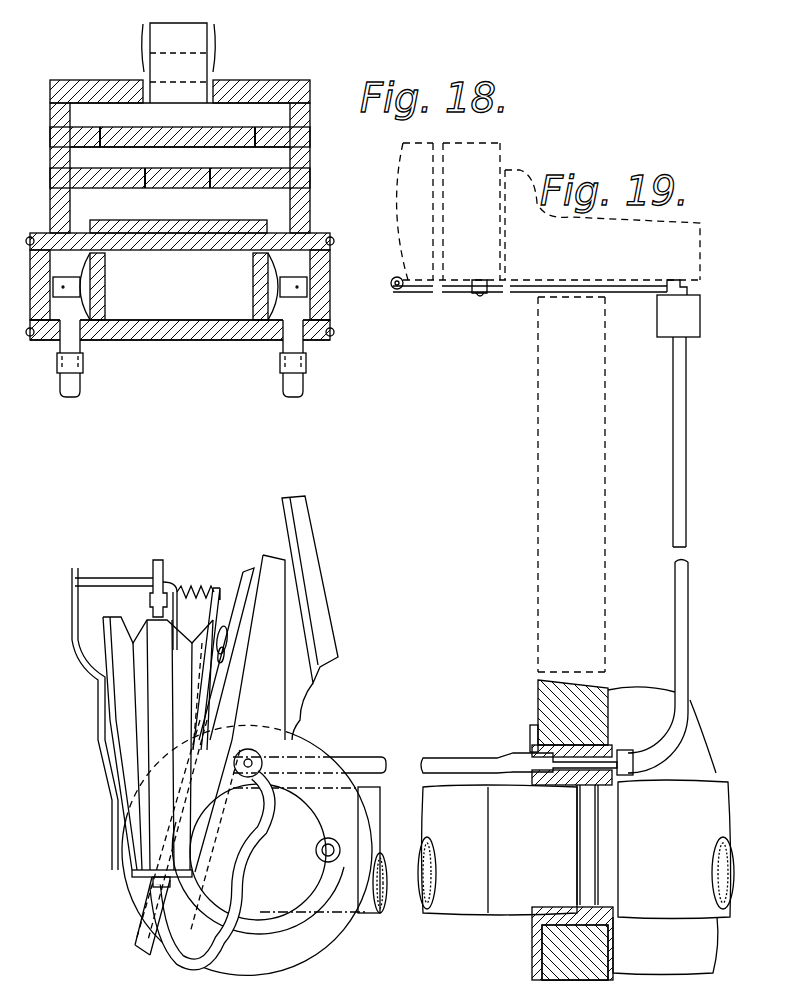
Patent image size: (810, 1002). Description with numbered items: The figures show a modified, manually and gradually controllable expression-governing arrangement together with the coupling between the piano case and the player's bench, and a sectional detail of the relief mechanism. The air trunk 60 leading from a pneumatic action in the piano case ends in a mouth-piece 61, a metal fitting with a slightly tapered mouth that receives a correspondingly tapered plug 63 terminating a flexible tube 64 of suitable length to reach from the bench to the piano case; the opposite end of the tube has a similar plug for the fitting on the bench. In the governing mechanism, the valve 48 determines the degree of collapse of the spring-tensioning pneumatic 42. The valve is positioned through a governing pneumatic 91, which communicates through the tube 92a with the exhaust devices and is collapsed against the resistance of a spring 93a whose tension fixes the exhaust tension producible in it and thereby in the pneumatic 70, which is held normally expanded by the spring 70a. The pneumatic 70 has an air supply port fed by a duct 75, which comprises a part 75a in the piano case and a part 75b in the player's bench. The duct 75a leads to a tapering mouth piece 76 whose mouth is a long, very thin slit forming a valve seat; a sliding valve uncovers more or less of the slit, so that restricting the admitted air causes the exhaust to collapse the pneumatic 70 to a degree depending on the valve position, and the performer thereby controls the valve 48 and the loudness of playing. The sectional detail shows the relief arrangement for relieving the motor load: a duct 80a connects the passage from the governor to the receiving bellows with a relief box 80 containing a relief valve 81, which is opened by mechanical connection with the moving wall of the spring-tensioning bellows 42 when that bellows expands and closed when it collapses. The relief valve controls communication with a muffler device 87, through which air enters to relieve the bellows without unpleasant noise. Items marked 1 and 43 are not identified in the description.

In FIG. 18, the muffler device 87 is at (261, 88).
In FIG. 18, the relief box 80 is at (233, 336).
In FIG. 18, the duct 80a is at (80, 393).
In FIG. 18, the relief valve 81 is at (88, 311).
In FIG. 19, the blade 1 is at (310, 543).
In FIG. 19, the spring-tensioning pneumatic 42 is at (284, 558).
In FIG. 19, the valve 48 is at (247, 570).
In FIG. 19, the pneumatic 70 is at (196, 690).
In FIG. 19, the spring 70a is at (190, 588).
In FIG. 19, the tube 92a is at (153, 563).
In FIG. 19, the spring 93a is at (77, 612).
In FIG. 19, the governing pneumatic 91 is at (127, 696).
In FIG. 19, the arm 43 is at (240, 698).
In FIG. 19, the duct 75 is at (437, 757).
In FIG. 19, the duct part 75a is at (675, 609).
In FIG. 19, the duct part 75b is at (232, 947).
In FIG. 19, the mouth piece 76 is at (665, 328).
In FIG. 19, the air trunk 60 is at (672, 877).
In FIG. 19, the mouth-piece 61 is at (550, 924).
In FIG. 19, the tapered plug 63 is at (515, 902).
In FIG. 19, the flexible tube 64 is at (437, 907).